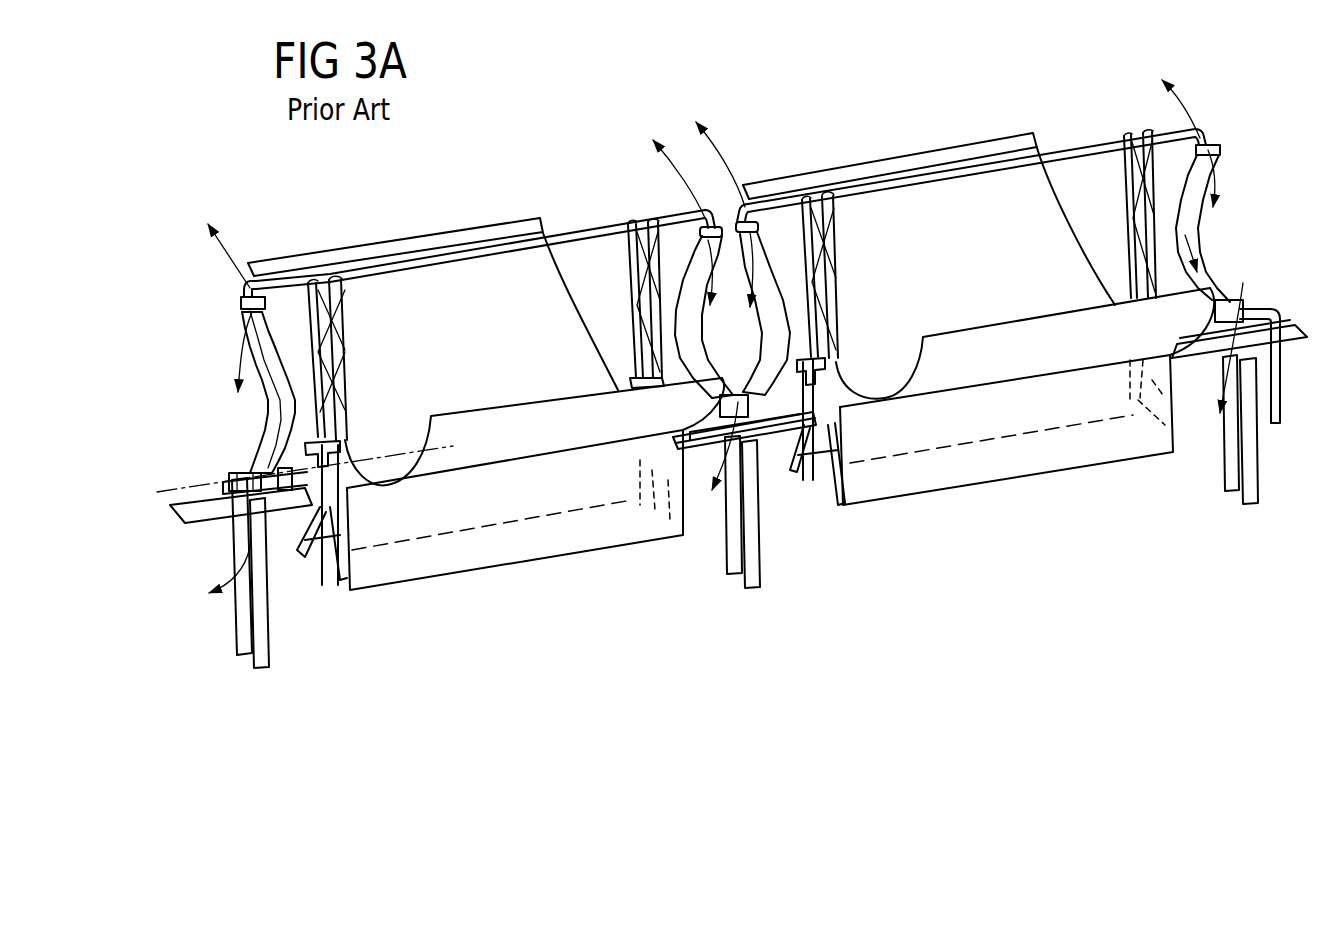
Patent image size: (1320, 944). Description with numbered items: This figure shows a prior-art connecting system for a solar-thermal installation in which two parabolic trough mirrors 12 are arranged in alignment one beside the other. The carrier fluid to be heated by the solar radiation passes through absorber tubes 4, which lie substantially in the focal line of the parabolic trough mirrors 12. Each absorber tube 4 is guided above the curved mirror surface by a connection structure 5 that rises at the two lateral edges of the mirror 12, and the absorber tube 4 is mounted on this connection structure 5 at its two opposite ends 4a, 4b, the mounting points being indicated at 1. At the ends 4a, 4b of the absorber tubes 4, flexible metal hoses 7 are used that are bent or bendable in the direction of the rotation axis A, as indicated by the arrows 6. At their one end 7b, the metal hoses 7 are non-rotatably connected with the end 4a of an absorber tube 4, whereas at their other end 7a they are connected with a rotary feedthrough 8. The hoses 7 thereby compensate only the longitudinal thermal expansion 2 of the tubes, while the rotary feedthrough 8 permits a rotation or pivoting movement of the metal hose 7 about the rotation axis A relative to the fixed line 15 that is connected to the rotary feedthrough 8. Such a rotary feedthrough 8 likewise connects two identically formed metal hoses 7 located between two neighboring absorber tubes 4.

The clamp / hook 1 is at (342, 287).
The longitudinal thermal expansion 2 is at (663, 203).
The absorber tube 4 is at (458, 261).
The end of absorber tube 4a is at (294, 282).
The end of absorber tube 4b is at (688, 213).
The connection structure 5 is at (347, 362).
The direction of movement 6 is at (232, 578).
The flexible metal hose 7 is at (272, 424).
The end of metal hose 7a is at (257, 477).
The end of metal hose 7b is at (257, 292).
The rotary feedthrough 8 is at (217, 484).
The parabolic trough mirror 12 is at (496, 374).
The fixed line 15 is at (247, 581).
The rotation axis A is at (160, 493).